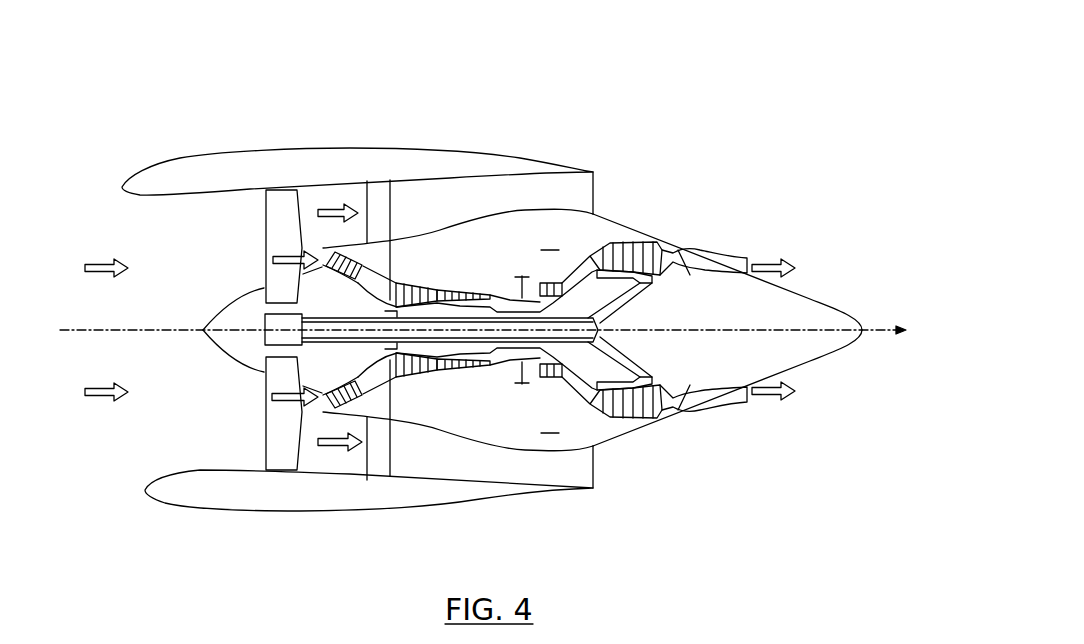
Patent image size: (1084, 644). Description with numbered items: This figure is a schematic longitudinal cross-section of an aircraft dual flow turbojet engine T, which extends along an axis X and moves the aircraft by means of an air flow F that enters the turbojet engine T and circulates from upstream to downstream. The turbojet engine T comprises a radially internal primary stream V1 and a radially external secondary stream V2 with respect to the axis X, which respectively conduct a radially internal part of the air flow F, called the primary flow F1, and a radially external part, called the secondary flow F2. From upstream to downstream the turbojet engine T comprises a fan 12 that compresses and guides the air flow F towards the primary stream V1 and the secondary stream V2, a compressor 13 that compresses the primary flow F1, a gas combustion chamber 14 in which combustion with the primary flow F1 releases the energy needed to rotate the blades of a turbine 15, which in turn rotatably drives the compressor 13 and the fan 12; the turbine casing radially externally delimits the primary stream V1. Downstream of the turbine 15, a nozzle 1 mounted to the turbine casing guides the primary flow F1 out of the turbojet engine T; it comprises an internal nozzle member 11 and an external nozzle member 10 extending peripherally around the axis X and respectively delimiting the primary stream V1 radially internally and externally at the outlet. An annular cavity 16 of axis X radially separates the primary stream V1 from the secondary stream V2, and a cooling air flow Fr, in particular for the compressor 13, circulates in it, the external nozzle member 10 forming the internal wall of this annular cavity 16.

The aircraft dual flow turbojet engine T is at (140, 124).
The nozzle 1 is at (847, 185).
The external nozzle member 10 is at (716, 253).
The internal nozzle member 11 is at (813, 298).
The fan 12 is at (275, 182).
The compressor 13 is at (381, 274).
The gas combustion chamber 14 is at (527, 296).
The turbine 15 is at (584, 260).
The annular cavity 16 is at (476, 407).
The primary stream V1 is at (323, 399).
The secondary stream V2 is at (404, 450).
The air flow F is at (106, 317).
The primary flow F1 is at (533, 332).
The secondary flow F2 is at (340, 330).
The cooling air flow Fr is at (550, 331).
The axis X is at (497, 333).